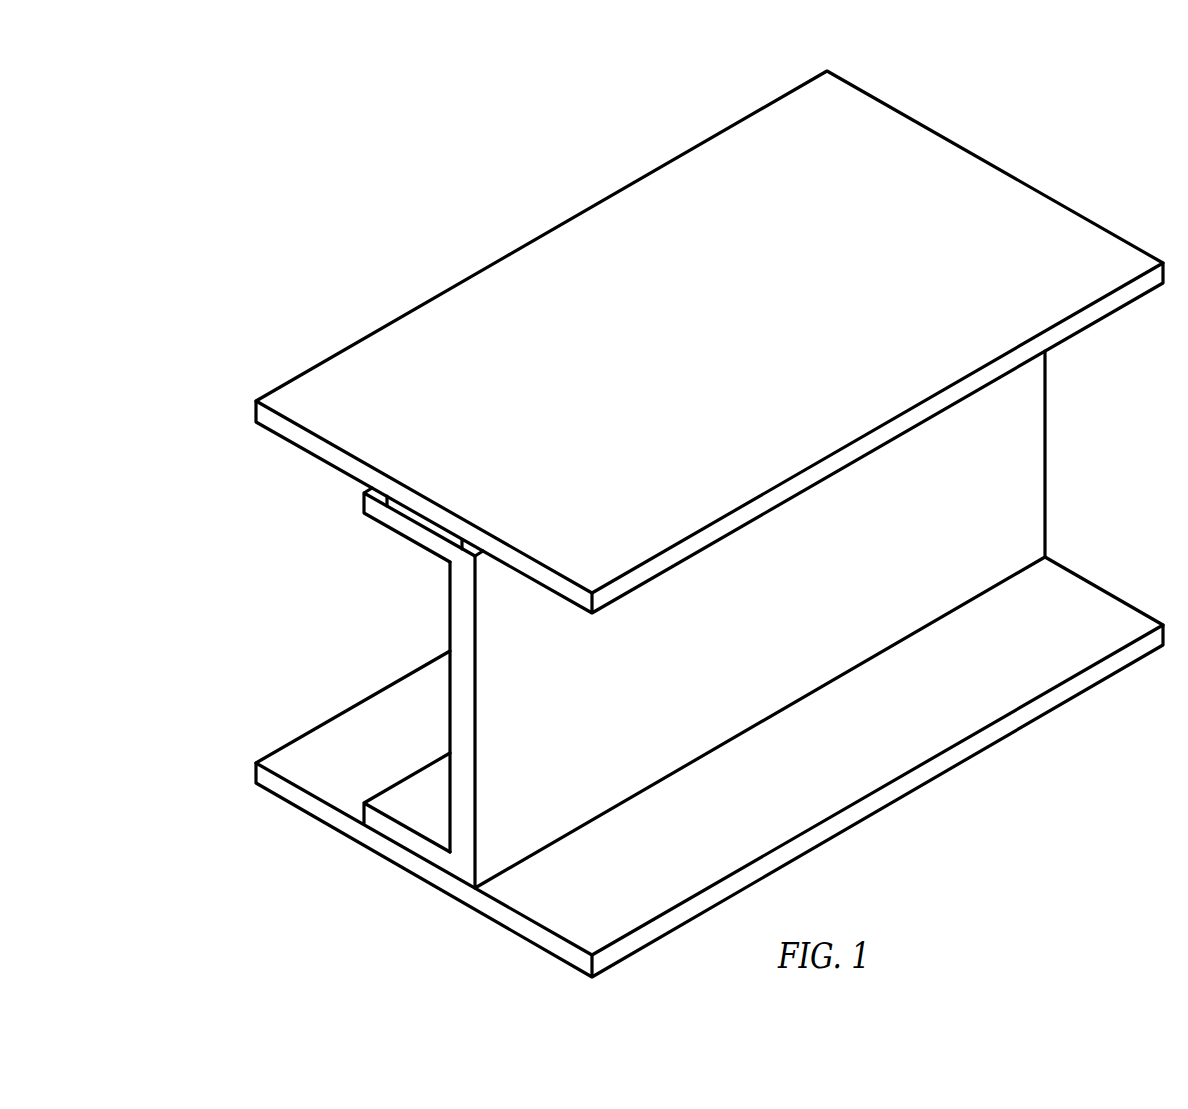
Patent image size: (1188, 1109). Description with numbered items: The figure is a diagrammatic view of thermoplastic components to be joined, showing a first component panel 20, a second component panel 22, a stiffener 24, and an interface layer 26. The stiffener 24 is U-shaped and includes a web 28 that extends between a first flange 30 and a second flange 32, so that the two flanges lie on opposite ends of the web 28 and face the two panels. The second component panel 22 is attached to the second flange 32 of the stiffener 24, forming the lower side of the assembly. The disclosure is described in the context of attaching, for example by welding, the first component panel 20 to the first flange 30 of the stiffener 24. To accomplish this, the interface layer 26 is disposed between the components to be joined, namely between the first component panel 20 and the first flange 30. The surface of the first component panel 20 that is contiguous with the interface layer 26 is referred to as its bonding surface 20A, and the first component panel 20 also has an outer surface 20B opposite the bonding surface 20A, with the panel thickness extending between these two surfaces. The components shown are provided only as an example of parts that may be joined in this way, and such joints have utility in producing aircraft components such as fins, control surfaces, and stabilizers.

The first component panel 20 is at (472, 221).
The bonding surface 20A is at (287, 444).
The outer surface 20B is at (322, 392).
The second component panel 22 is at (287, 820).
The stiffener 24 is at (355, 661).
The interface layer 26 is at (407, 512).
The web 28 is at (775, 656).
The first flange 30 is at (405, 541).
The second flange 32 is at (413, 806).